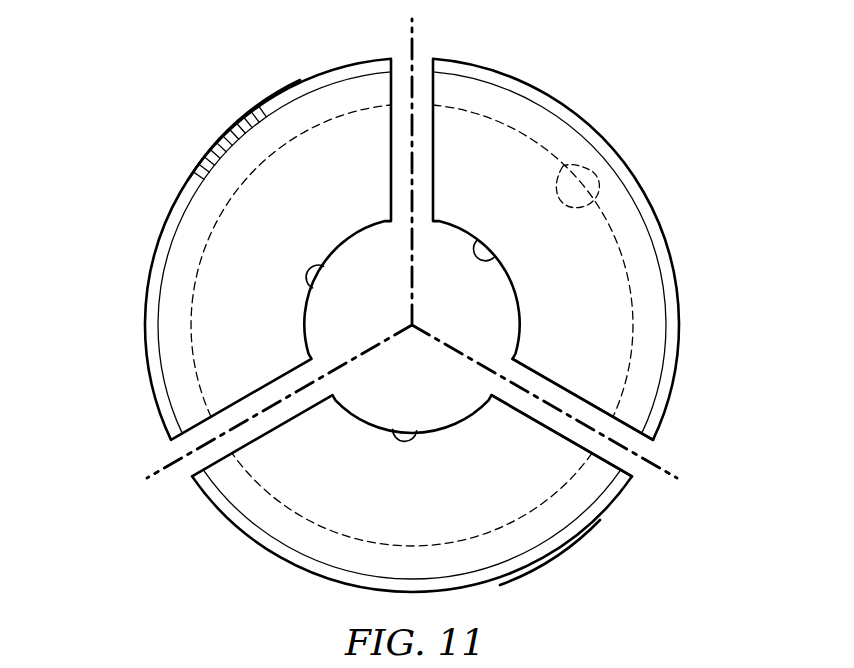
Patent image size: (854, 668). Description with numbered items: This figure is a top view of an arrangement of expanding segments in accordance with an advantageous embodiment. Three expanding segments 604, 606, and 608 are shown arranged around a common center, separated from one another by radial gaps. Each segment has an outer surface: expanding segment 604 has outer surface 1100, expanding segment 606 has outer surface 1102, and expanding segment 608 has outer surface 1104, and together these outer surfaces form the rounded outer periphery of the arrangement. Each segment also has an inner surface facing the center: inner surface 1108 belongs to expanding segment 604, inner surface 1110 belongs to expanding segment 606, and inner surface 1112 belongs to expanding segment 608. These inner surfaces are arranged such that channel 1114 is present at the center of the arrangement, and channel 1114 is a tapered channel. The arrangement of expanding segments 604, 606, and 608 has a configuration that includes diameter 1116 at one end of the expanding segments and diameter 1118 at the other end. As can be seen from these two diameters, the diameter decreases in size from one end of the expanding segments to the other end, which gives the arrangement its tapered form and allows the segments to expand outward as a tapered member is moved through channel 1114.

The outer surface 1100 is at (414, 317).
The outer surface 1102 is at (146, 324).
The outer surface 1104 is at (252, 540).
The expanding segment 604 is at (542, 91).
The expanding segment 606 is at (282, 91).
The expanding segment 608 is at (542, 559).
The inner surface 1108 is at (488, 244).
The inner surface 1110 is at (318, 265).
The inner surface 1112 is at (398, 432).
The channel 1114 is at (415, 323).
The diameter 1116 is at (526, 367).
The diameter 1118 is at (600, 174).